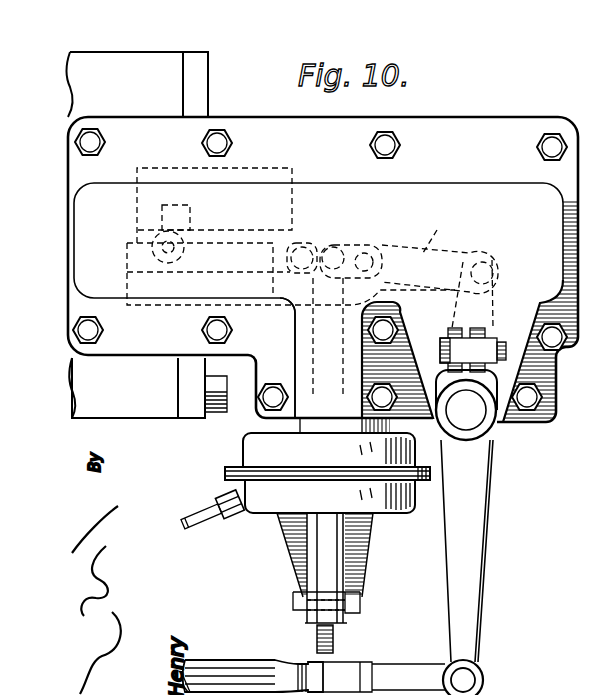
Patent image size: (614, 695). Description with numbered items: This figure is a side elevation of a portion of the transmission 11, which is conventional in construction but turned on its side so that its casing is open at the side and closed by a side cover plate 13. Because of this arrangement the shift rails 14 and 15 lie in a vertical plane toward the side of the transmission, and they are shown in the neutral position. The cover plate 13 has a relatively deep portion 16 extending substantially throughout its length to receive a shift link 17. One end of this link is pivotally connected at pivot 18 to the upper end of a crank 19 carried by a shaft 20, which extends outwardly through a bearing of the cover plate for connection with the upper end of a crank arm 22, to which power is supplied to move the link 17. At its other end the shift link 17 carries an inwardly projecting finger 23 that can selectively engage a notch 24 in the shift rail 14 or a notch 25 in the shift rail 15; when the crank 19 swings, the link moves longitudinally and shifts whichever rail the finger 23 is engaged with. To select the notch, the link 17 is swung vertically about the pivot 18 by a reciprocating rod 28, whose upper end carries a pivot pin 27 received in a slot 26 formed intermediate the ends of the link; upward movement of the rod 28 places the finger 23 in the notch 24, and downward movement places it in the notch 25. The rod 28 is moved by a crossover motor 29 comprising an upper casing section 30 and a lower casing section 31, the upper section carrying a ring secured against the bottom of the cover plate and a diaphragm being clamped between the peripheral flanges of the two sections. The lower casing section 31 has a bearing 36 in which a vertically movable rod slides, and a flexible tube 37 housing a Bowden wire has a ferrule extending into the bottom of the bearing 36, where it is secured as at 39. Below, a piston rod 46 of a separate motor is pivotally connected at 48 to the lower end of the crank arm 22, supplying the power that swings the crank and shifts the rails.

The transmission 11 is at (472, 112).
The side cover plate 13 is at (565, 177).
The shift rail 14 is at (272, 170).
The shift rail 15 is at (272, 358).
The deep portion 16 is at (318, 300).
The shift link 17 is at (440, 259).
The pivot 18 is at (485, 264).
The crank 19 is at (488, 314).
The shaft 20 is at (472, 416).
The crank arm 22 is at (484, 529).
The finger 23 is at (172, 263).
The notch 24 is at (189, 210).
The notch 25 is at (161, 264).
The slot 26 is at (372, 236).
The pivot pin 27 is at (338, 236).
The reciprocating rod 28 is at (366, 306).
The crossover motor 29 is at (236, 442).
The upper casing section 30 is at (240, 450).
The lower casing section 31 is at (268, 505).
The bearing 36 is at (314, 558).
The flexible tube 37 is at (340, 645).
The securing means 39 is at (373, 604).
The piston rod 46 is at (219, 654).
The pivotal connection 48 is at (470, 683).